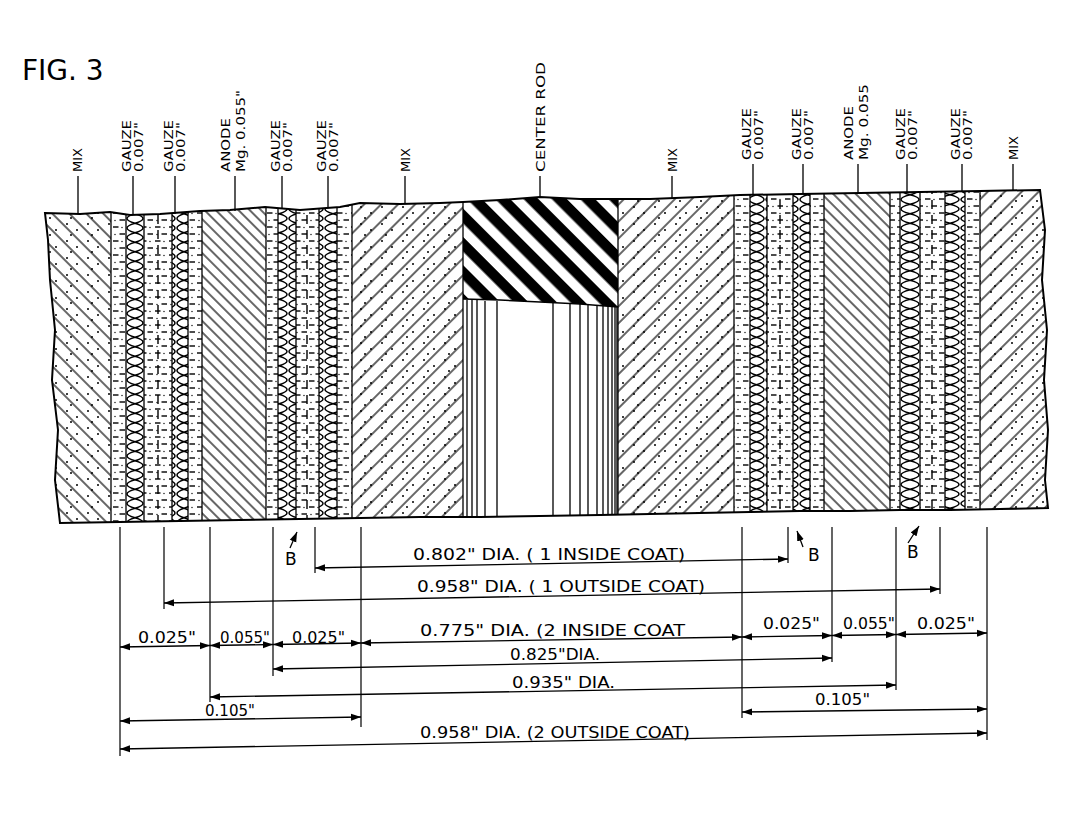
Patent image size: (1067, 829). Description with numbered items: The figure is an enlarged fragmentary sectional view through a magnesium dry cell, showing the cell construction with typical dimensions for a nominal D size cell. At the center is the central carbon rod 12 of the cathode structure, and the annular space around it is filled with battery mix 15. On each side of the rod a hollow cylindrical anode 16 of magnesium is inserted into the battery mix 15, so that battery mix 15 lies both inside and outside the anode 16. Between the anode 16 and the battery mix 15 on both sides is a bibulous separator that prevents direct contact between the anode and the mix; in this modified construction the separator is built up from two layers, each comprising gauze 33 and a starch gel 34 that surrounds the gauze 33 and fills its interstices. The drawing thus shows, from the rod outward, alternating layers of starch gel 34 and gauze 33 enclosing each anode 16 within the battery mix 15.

The central carbon rod 12 is at (557, 506).
The battery mix 15 is at (100, 524).
The anode 16 is at (221, 523).
The gauze 33 is at (130, 213).
The starch gel 34 is at (160, 214).